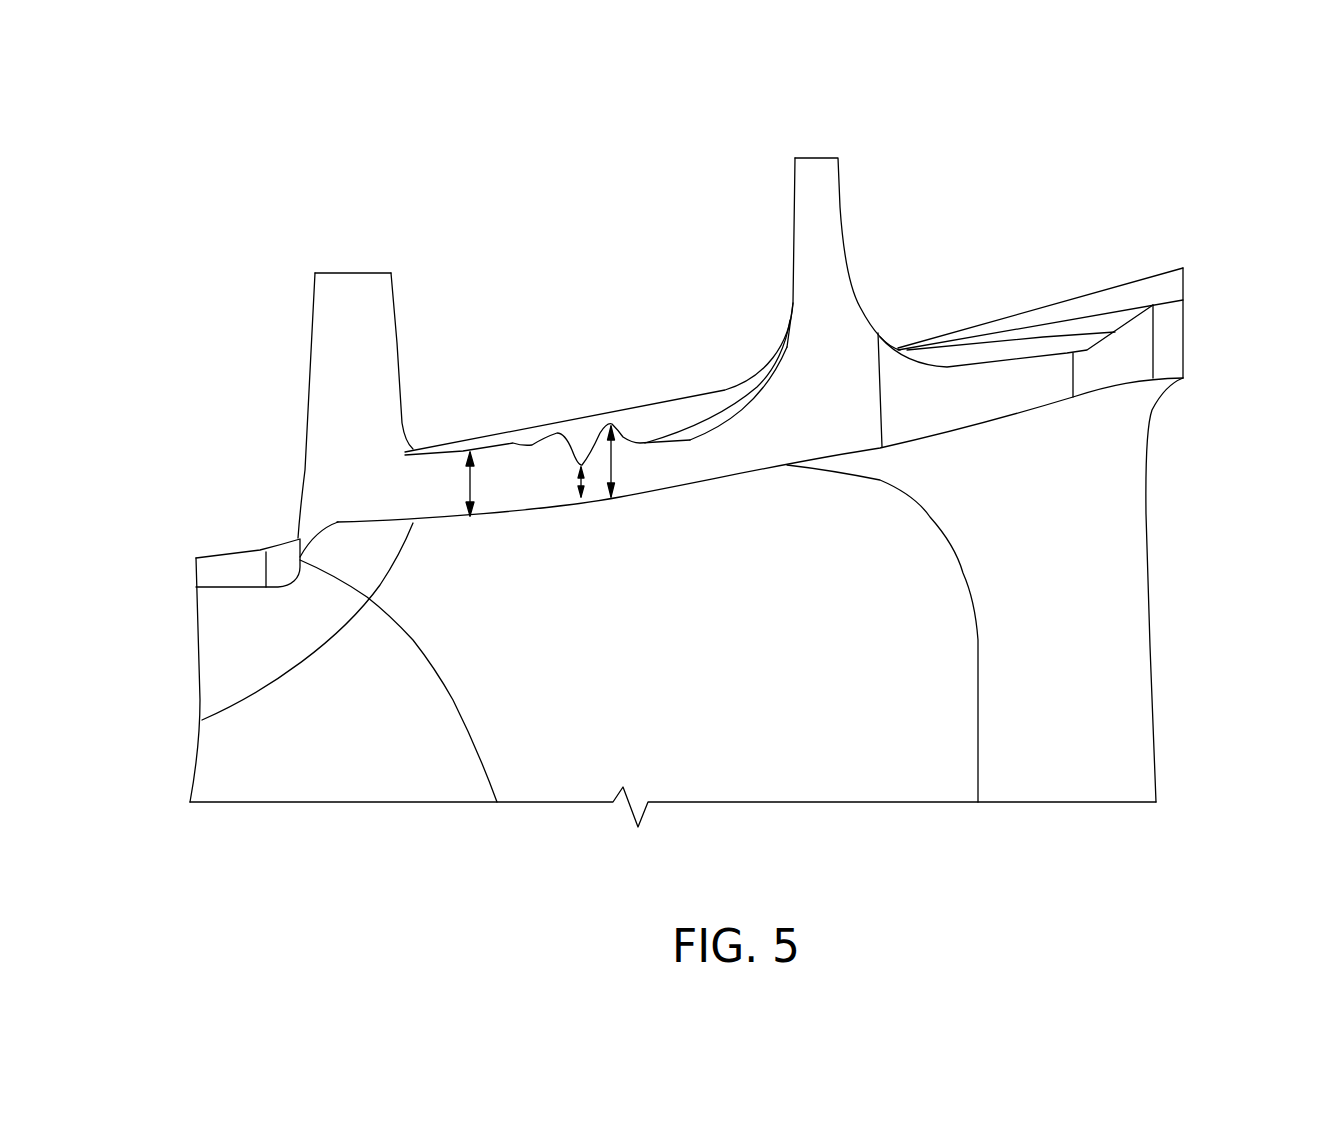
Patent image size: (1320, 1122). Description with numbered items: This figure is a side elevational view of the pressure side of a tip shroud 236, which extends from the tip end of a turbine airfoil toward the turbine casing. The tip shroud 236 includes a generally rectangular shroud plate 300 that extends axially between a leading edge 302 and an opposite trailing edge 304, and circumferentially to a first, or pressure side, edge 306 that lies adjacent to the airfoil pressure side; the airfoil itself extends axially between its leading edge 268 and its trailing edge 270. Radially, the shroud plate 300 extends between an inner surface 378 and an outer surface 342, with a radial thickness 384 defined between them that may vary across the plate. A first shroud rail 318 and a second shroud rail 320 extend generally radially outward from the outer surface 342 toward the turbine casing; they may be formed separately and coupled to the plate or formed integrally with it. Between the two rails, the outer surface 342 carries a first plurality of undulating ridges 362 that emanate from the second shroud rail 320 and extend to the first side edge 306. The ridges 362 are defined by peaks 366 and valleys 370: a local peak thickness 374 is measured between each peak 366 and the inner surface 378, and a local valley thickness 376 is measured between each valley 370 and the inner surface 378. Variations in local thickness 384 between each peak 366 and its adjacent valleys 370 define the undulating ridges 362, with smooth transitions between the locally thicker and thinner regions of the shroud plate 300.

The tip shroud 236 is at (302, 88).
The leading edge 268 is at (200, 680).
The trailing edge 270 is at (1168, 656).
The shroud plate 300 is at (1187, 316).
The leading edge 302 is at (297, 497).
The trailing edge 304 is at (1187, 356).
The first side edge 306 is at (1020, 407).
The first shroud rail 318 is at (343, 272).
The second shroud rail 320 is at (820, 158).
The outer surface 342 is at (930, 340).
The undulating ridges 362 is at (620, 317).
The peaks 366 is at (641, 414).
The valleys 370 is at (580, 447).
The local peak thickness 374 is at (613, 460).
The local valley thickness 376 is at (580, 483).
The inner surface 378 is at (200, 717).
The radial thickness 384 is at (468, 464).